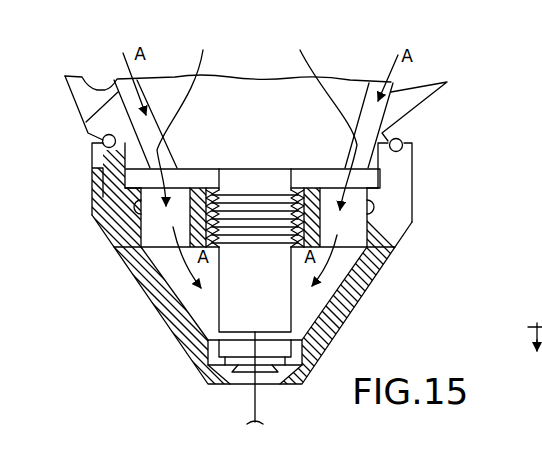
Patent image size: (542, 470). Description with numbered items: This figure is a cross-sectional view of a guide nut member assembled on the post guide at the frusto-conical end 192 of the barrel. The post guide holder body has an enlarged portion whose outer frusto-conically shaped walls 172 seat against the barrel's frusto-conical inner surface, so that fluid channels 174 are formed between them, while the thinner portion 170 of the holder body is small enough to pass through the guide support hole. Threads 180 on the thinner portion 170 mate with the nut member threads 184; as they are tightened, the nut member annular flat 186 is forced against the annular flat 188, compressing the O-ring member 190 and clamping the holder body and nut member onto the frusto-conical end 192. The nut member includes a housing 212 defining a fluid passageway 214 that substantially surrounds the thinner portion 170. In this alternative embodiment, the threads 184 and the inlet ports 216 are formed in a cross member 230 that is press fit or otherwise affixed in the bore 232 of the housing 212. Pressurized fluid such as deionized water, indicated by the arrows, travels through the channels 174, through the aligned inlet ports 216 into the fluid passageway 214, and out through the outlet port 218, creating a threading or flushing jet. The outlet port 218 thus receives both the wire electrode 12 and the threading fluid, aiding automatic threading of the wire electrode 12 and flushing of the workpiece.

The wire electrode 12 is at (256, 405).
The thinner portion 170 is at (196, 333).
The outer frusto-conically shaped walls 172 is at (279, 125).
The fluid channels 174 is at (128, 87).
The threads 180 is at (212, 306).
The threads 184 is at (335, 238).
The nut member annular flat 186 is at (101, 138).
The annular flat 188 is at (403, 144).
The O-ring member 190 is at (77, 117).
The frusto-conical end 192 is at (452, 94).
The housing 212 is at (352, 283).
The fluid passageway 214 is at (342, 323).
The inlet ports 216 is at (197, 212).
The outlet port 218 is at (245, 374).
The cross member 230 is at (378, 199).
The bore 232 is at (117, 223).